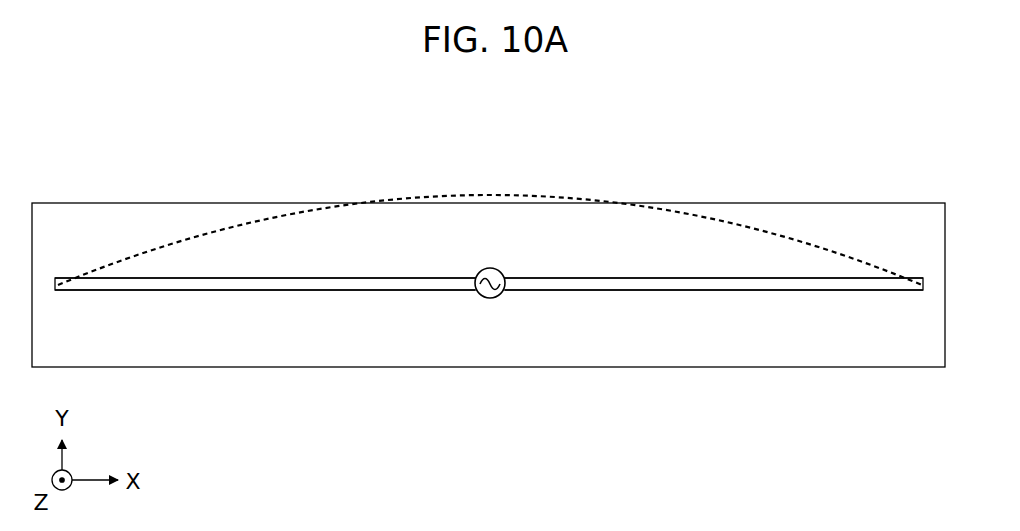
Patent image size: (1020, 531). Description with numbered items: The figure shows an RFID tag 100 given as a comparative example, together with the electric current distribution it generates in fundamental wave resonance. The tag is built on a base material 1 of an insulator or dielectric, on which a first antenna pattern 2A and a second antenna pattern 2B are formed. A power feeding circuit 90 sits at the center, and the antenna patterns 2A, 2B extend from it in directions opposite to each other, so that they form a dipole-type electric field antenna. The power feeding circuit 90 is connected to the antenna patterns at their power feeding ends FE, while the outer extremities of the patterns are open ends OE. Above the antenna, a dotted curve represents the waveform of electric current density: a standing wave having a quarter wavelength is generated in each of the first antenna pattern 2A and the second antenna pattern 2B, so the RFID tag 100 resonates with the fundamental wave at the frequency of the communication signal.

The base material 1 is at (415, 216).
The first antenna pattern 2A is at (326, 282).
The second antenna pattern 2B is at (653, 282).
The power feeding circuit 90 is at (490, 268).
The RFID tag 100 is at (732, 226).
The open end OE is at (55, 272).
The power feeding end FE is at (473, 292).